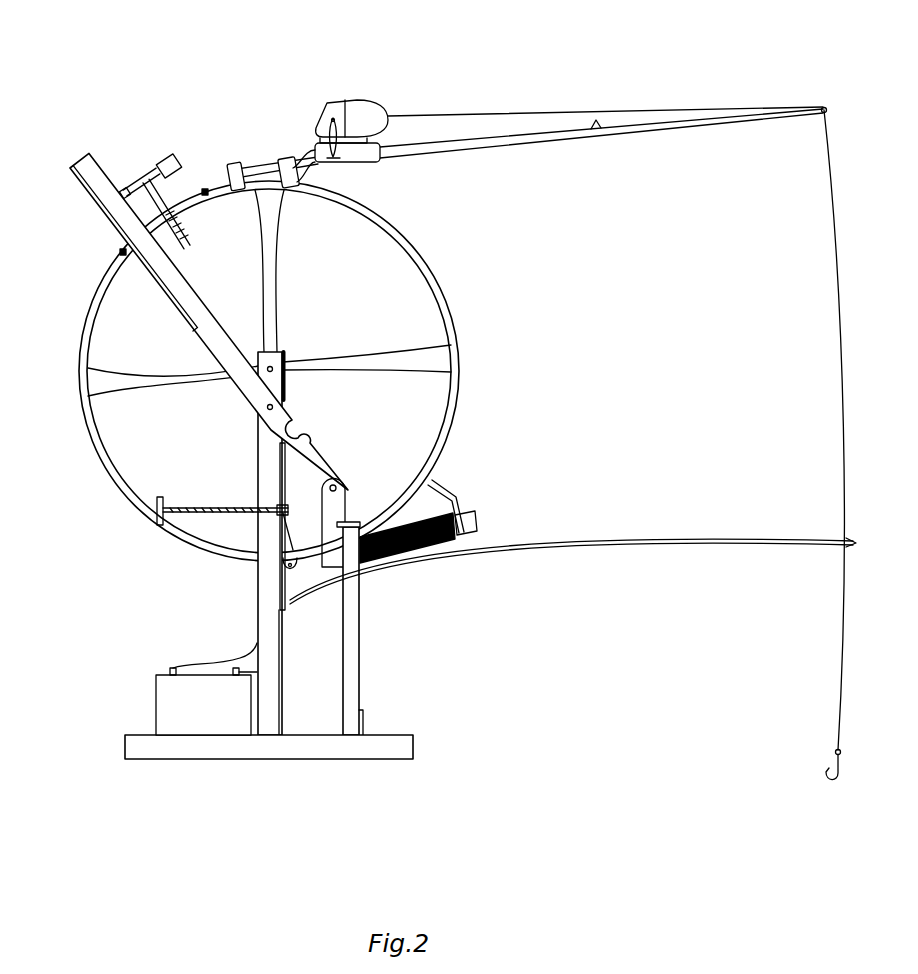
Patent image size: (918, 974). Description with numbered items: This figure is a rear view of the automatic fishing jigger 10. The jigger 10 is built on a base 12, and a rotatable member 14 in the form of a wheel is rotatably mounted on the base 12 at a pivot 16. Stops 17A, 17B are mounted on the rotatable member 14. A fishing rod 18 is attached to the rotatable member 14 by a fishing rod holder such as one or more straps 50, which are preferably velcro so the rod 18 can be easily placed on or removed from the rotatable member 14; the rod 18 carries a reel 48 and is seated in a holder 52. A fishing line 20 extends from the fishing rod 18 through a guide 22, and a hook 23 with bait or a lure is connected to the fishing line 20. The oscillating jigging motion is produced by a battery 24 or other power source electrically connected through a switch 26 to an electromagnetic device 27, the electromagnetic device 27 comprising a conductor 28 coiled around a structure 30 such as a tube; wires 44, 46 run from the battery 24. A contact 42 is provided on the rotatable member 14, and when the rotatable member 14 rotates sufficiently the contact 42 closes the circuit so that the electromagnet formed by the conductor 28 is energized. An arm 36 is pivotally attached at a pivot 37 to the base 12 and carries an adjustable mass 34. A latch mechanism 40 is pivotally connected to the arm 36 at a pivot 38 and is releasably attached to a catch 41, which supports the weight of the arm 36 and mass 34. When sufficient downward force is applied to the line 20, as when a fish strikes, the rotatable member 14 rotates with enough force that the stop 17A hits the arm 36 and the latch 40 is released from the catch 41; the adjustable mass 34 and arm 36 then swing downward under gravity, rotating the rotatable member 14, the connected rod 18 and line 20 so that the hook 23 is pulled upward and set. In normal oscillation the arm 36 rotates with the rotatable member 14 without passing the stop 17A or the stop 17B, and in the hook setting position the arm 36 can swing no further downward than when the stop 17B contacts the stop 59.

The fishing jigger 10 is at (98, 68).
The base 12 is at (122, 742).
The rotatable member 14 is at (97, 457).
The pivot 16 is at (283, 352).
The stop 17A is at (207, 195).
The stop 17B is at (118, 250).
The fishing rod 18 is at (635, 133).
The fishing line 20 is at (845, 350).
The guide 22 is at (630, 543).
The hook 23 is at (836, 754).
The battery 24 is at (156, 690).
The switch 26 is at (284, 392).
The electromagnetic device 27 is at (390, 575).
The conductor 28 is at (437, 505).
The structure 30 is at (478, 528).
The adjustable mass 34 is at (160, 162).
The arm 36 is at (82, 157).
The pivot 37 is at (267, 408).
The pivot 38 is at (334, 478).
The latch mechanism 40 is at (347, 503).
The catch 41 is at (340, 524).
The contact 42 is at (288, 573).
The wire 44 is at (253, 675).
The wire 46 is at (202, 660).
The reel 48 is at (372, 100).
The straps 50 is at (240, 163).
The reel seat 52 is at (270, 157).
The stop 59 is at (163, 498).